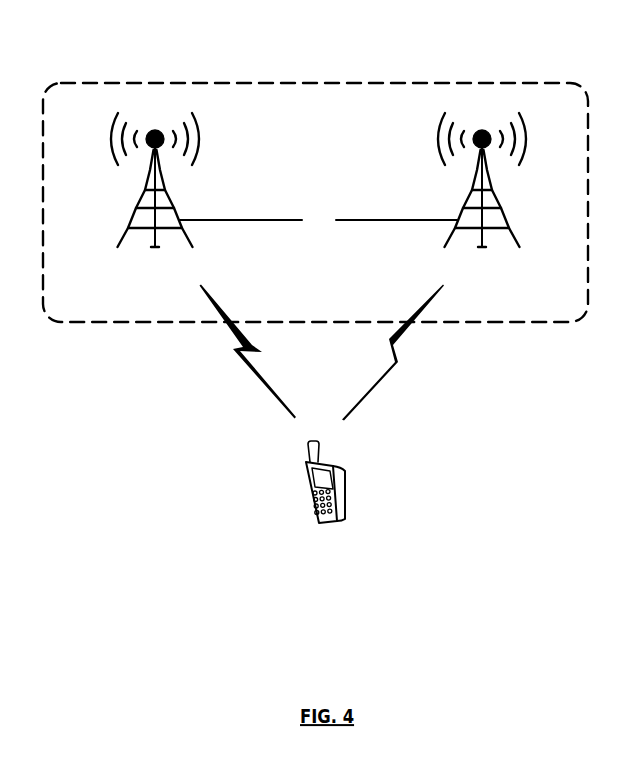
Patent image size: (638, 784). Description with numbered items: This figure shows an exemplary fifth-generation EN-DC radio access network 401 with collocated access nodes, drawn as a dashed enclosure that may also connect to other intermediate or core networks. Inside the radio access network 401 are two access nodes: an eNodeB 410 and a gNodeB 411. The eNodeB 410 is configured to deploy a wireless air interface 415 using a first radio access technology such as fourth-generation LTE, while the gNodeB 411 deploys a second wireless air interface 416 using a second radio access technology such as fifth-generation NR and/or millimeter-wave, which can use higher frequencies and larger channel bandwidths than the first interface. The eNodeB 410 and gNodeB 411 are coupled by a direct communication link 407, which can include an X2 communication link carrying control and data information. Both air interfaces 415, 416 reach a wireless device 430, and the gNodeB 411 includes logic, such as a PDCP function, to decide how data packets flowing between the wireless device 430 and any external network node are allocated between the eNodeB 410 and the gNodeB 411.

The radio access network 401 is at (118, 80).
The direct communication link 407 is at (385, 220).
The eNodeB 410 is at (133, 210).
The gNodeB 411 is at (502, 213).
The wireless air interface 415 is at (240, 356).
The second wireless air interface 416 is at (402, 358).
The wireless device 430 is at (308, 515).